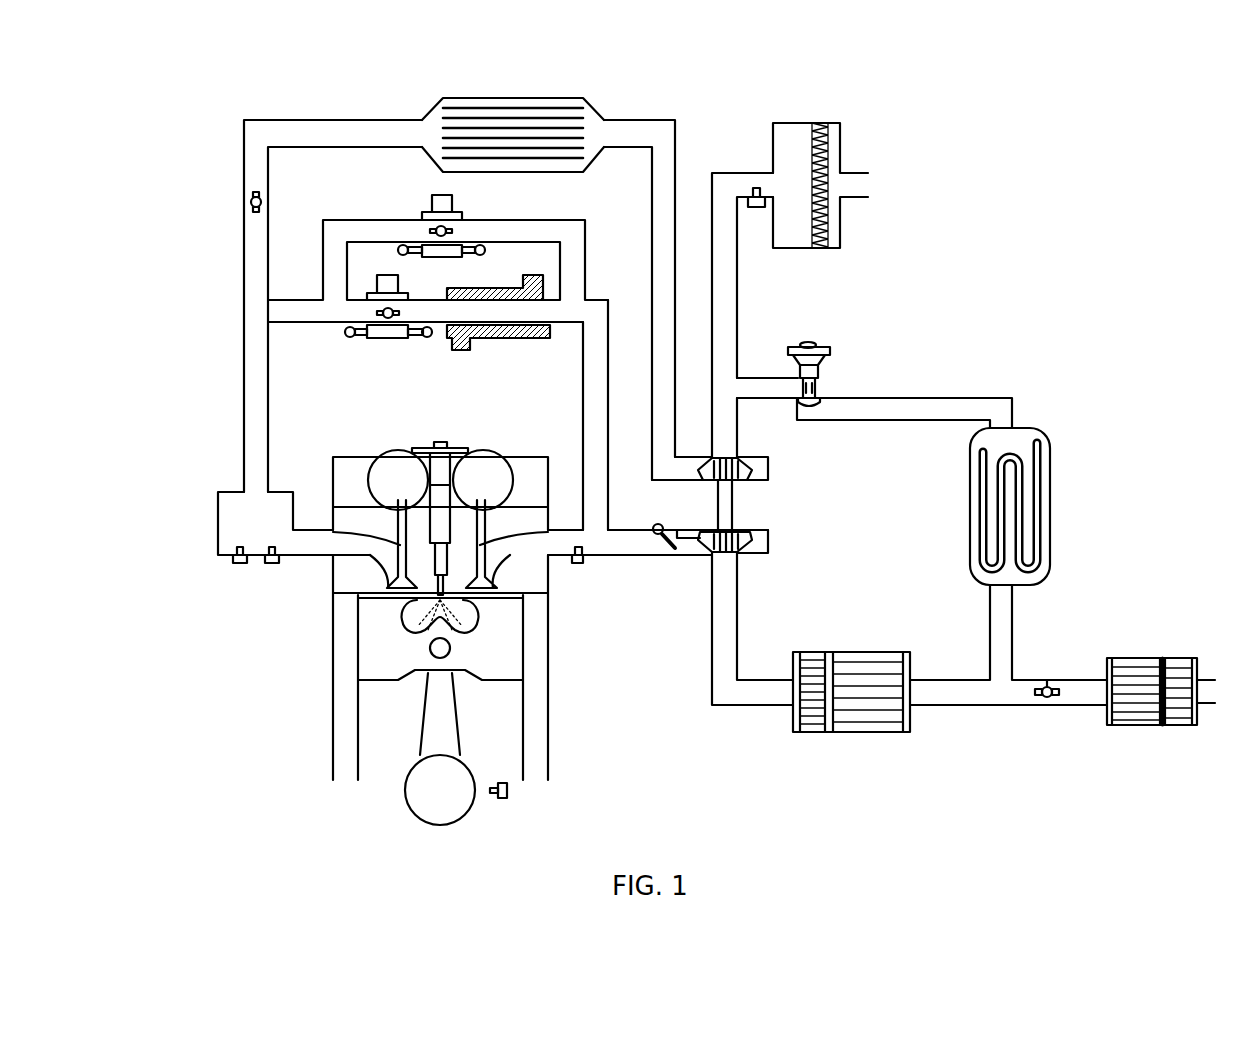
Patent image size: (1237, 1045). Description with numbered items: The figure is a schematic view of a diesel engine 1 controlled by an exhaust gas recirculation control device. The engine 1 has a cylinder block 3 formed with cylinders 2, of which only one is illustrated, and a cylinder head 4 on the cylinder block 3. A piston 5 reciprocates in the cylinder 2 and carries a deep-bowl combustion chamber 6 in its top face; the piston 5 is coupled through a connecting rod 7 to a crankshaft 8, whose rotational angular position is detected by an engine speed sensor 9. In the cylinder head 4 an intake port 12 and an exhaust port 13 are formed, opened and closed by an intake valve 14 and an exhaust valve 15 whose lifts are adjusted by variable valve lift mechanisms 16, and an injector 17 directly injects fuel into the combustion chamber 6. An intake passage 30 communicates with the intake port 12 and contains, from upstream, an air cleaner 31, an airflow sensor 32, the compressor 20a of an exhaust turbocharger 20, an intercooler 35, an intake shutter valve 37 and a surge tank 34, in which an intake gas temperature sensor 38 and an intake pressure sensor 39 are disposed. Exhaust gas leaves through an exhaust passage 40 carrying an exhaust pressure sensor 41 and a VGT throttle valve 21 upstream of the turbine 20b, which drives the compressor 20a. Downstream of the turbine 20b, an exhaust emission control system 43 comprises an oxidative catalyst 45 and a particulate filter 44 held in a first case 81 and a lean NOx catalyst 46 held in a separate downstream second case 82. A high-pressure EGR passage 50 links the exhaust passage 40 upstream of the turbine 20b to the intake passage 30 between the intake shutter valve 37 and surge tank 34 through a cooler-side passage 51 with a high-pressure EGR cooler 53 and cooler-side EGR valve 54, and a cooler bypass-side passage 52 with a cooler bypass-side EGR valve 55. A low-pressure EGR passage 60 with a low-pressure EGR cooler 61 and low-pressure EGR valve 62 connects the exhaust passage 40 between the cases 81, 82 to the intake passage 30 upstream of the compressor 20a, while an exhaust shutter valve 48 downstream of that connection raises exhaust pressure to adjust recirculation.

The engine 1 is at (353, 430).
The cylinder 2 is at (516, 712).
The cylinder block 3 is at (340, 725).
The cylinder head 4 is at (330, 517).
The piston 5 is at (368, 645).
The combustion chamber 6 is at (465, 617).
The connecting rod 7 is at (423, 715).
The crankshaft 8 is at (440, 826).
The engine speed sensor 9 is at (502, 800).
The intake port 12 is at (362, 542).
The exhaust port 13 is at (512, 540).
The intake valve 14 is at (363, 557).
The exhaust valve 15 is at (507, 558).
The variable valve lift mechanism 16 is at (390, 450).
The injector 17 is at (442, 442).
The exhaust turbocharger 20 is at (746, 513).
The compressor 20a is at (740, 463).
The turbine 20b is at (740, 548).
The VGT throttle valve 21 is at (652, 525).
The intake passage 30 is at (676, 196).
The air cleaner 31 is at (818, 123).
The airflow sensor 32 is at (757, 208).
The surge tank 34 is at (218, 513).
The intercooler 35 is at (540, 97).
The intake shutter valve 37 is at (261, 202).
The intake gas temperature sensor 38 is at (270, 565).
The intake pressure sensor 39 is at (238, 565).
The exhaust passage 40 is at (714, 652).
The exhaust pressure sensor 41 is at (583, 565).
The exhaust emission control system 43 is at (1208, 789).
The particulate filter 44 is at (877, 733).
The oxidative catalyst 45 is at (812, 733).
The lean NOx catalyst 46 is at (1138, 726).
The exhaust shutter valve 48 is at (1047, 680).
The high-pressure EGR passage 50 is at (603, 320).
The cooler-side passage 51 is at (512, 322).
The cooler bypass-side passage 52 is at (377, 216).
The high-pressure EGR cooler 53 is at (512, 287).
The cooler-side EGR valve 54 is at (400, 313).
The cooler bypass-side EGR valve 55 is at (453, 232).
The low-pressure EGR passage 60 is at (899, 402).
The low-pressure EGR cooler 61 is at (1050, 516).
The low-pressure EGR valve 62 is at (810, 340).
The first case 81 is at (865, 652).
The second case 82 is at (1175, 658).